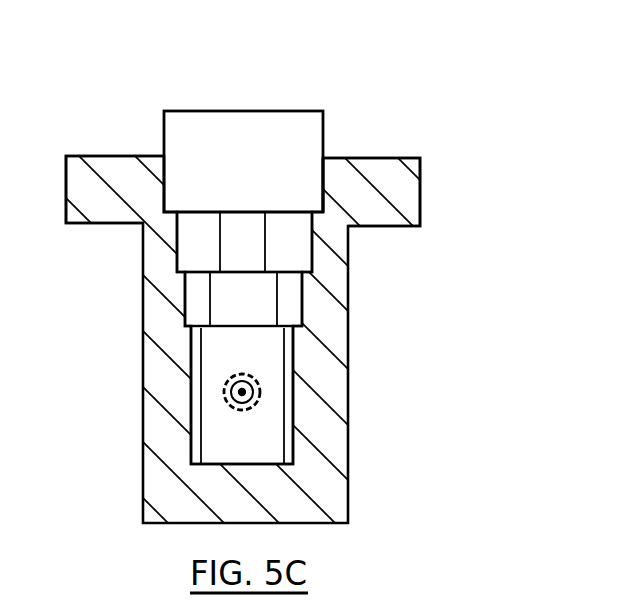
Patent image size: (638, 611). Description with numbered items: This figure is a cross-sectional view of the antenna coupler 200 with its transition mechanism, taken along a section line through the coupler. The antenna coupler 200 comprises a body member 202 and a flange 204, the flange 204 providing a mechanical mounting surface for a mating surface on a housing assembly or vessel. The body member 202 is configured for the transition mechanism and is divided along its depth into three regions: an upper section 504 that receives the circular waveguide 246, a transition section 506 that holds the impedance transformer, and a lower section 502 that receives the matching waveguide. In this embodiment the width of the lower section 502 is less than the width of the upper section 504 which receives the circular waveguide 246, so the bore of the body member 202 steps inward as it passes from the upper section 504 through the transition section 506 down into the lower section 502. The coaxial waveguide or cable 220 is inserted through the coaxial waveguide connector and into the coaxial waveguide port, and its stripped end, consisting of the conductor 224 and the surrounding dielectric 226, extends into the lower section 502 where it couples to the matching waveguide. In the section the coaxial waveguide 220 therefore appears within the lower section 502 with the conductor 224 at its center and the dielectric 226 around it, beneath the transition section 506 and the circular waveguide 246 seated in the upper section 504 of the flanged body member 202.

The antenna coupler 200 is at (319, 295).
The body member 202 is at (348, 297).
The flange 204 is at (421, 204).
The coaxial waveguide or cable 220 is at (262, 384).
The conductor 224 is at (240, 398).
The dielectric 226 is at (243, 374).
The circular waveguide 246 is at (200, 112).
The lower section 502 is at (191, 398).
The upper section 504 is at (333, 168).
The transition section 506 is at (312, 252).